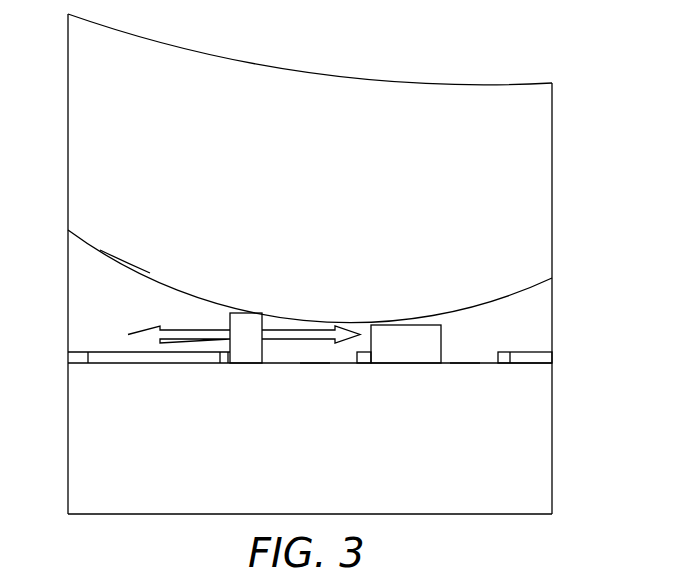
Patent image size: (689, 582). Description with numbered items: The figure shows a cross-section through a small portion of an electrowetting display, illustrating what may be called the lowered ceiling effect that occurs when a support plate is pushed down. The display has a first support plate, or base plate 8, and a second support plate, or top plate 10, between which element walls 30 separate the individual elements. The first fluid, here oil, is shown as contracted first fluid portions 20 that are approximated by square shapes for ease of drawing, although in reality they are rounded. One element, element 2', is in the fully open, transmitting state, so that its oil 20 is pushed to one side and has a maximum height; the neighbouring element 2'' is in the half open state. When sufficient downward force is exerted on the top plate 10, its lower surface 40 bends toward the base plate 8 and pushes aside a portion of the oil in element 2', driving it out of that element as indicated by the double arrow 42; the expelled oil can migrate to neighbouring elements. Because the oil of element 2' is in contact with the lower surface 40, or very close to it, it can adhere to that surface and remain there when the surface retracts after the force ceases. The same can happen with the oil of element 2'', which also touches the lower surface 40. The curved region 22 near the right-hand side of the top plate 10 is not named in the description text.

The top plate 10 is at (535, 172).
The curved lower surface 22 is at (535, 312).
The lower surface 40 is at (132, 265).
The base plate 8 is at (535, 437).
The element walls 30 is at (80, 356).
The first fluid portion 20 is at (243, 353).
The double arrow 42 is at (153, 327).
The element 2' is at (329, 377).
The element 2'' is at (481, 376).